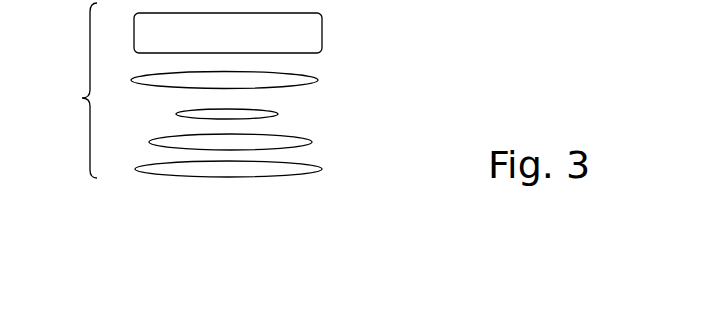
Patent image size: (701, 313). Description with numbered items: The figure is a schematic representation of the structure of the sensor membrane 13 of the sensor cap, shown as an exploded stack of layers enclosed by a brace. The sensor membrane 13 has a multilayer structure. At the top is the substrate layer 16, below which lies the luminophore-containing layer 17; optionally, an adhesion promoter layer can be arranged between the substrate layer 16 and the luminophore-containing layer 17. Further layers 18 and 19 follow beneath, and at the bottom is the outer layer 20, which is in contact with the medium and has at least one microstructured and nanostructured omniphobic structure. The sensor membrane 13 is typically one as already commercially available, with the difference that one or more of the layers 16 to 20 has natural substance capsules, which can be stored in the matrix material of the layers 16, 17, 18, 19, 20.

The sensor membrane 13 is at (72, 90).
The substrate layer 16 is at (302, 31).
The luminophore-containing layer 17 is at (316, 80).
The layer 18 is at (277, 114).
The layer 19 is at (311, 142).
The outer layer 20 is at (320, 169).